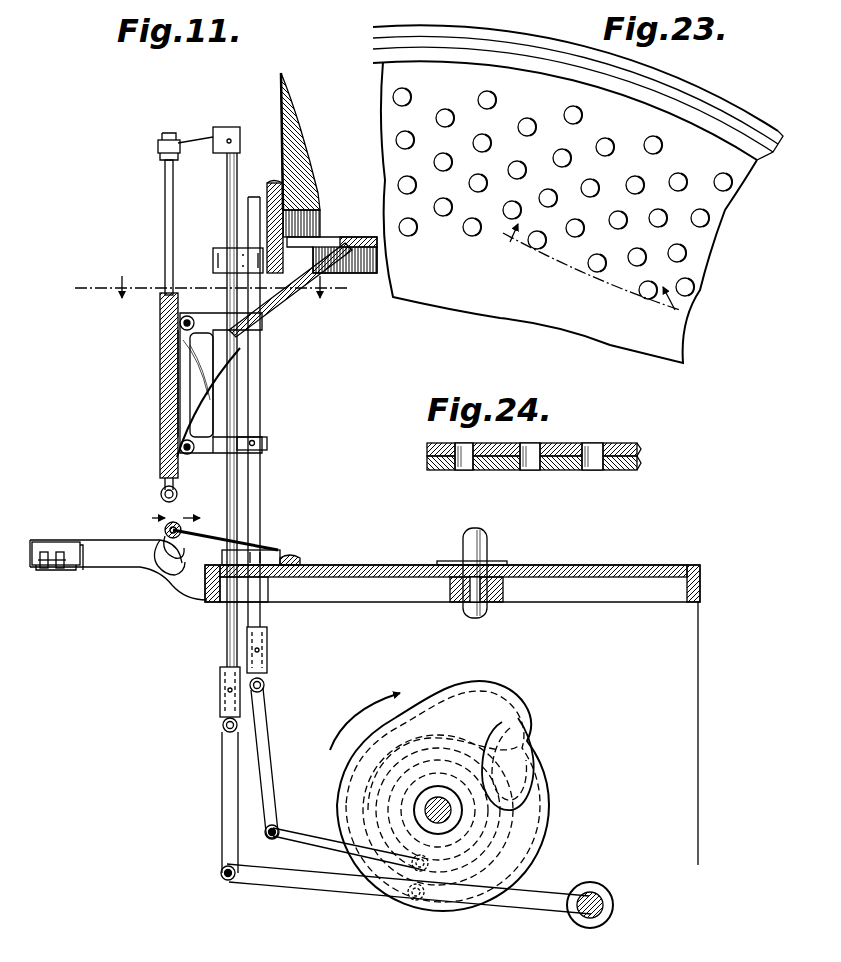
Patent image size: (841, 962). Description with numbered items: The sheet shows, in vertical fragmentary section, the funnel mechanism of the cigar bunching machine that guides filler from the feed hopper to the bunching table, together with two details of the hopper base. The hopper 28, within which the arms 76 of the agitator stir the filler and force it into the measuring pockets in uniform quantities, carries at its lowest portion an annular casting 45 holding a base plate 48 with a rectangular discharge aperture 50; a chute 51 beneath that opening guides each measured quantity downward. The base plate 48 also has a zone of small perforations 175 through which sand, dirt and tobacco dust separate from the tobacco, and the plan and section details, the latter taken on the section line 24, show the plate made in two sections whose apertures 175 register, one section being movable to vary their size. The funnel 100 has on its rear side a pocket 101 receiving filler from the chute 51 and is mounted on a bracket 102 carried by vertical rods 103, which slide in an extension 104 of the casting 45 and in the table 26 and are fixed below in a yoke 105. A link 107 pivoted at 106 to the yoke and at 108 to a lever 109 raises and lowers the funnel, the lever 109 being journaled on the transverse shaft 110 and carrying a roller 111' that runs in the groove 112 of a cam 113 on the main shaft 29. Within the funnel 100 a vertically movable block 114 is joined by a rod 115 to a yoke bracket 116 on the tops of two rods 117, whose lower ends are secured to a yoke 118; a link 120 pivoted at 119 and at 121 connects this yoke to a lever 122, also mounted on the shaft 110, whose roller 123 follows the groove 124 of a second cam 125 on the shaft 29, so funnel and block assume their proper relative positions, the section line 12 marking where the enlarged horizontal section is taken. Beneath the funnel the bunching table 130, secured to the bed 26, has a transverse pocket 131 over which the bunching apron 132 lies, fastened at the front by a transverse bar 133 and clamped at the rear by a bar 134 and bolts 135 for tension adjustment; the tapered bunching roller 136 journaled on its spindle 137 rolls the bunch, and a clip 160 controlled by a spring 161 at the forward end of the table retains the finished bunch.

In FIG. 11, the section line 12 is at (216, 288).
In FIG. 11, the rod 115 is at (165, 205).
In FIG. 11, the yoke bracket 116 is at (220, 106).
In FIG. 11, the vertical rods 117 is at (228, 186).
In FIG. 11, the extension 104 is at (217, 240).
In FIG. 11, the annular casting 45 is at (270, 183).
In FIG. 23, the annular casting 45 is at (713, 100).
In FIG. 11, the hopper 28 is at (293, 140).
In FIG. 11, the rectangular discharge aperture 50 is at (327, 237).
In FIG. 11, the chute 51 is at (285, 313).
In FIG. 11, the block 114 is at (160, 343).
In FIG. 11, the funnel 100 is at (160, 403).
In FIG. 11, the pocket 101 is at (217, 380).
In FIG. 11, the vertical rods 103 is at (253, 437).
In FIG. 11, the bracket 102 is at (215, 447).
In FIG. 11, the bunching apron 132 is at (260, 553).
In FIG. 11, the spindle 137 is at (163, 527).
In FIG. 11, the tapered bunching roller 136 is at (167, 533).
In FIG. 11, the bunching table 130 is at (143, 555).
In FIG. 11, the transverse recess or pocket 131 is at (168, 555).
In FIG. 11, the transverse bar 133 is at (57, 572).
In FIG. 11, the clip 160 is at (67, 572).
In FIG. 11, the spring 161 is at (50, 572).
In FIG. 11, the transverse bar 134 is at (305, 565).
In FIG. 11, the bolts 135 is at (290, 560).
In FIG. 11, the bed or table 26 is at (548, 570).
In FIG. 11, the agitator arms 76 is at (488, 550).
In FIG. 11, the yoke 105 is at (268, 646).
In FIG. 11, the pivot 106 is at (265, 688).
In FIG. 11, the link 107 is at (264, 763).
In FIG. 11, the pivot 108 is at (278, 826).
In FIG. 11, the lever 109 is at (313, 840).
In FIG. 11, the yoke 118 is at (220, 690).
In FIG. 11, the pivot 119 is at (225, 728).
In FIG. 11, the link 120 is at (230, 763).
In FIG. 11, the pivot 121 is at (226, 885).
In FIG. 11, the lever 122 is at (327, 883).
In FIG. 11, the roller 111' is at (381, 890).
In FIG. 11, the roller 123 is at (413, 898).
In FIG. 11, the cam 113 is at (537, 777).
In FIG. 11, the cam 125 is at (483, 682).
In FIG. 11, the groove 124 is at (523, 727).
In FIG. 11, the groove 112 is at (533, 803).
In FIG. 11, the main shaft 29 is at (443, 813).
In FIG. 11, the transversely extending shaft 110 is at (605, 903).
In FIG. 23, the base plate 48 is at (487, 305).
In FIG. 24, the base plate 48 is at (427, 458).
In FIG. 23, the perforations or apertures 175 is at (470, 230).
In FIG. 24, the perforations or apertures 175 is at (593, 469).
In FIG. 23, the section line 24 is at (583, 278).